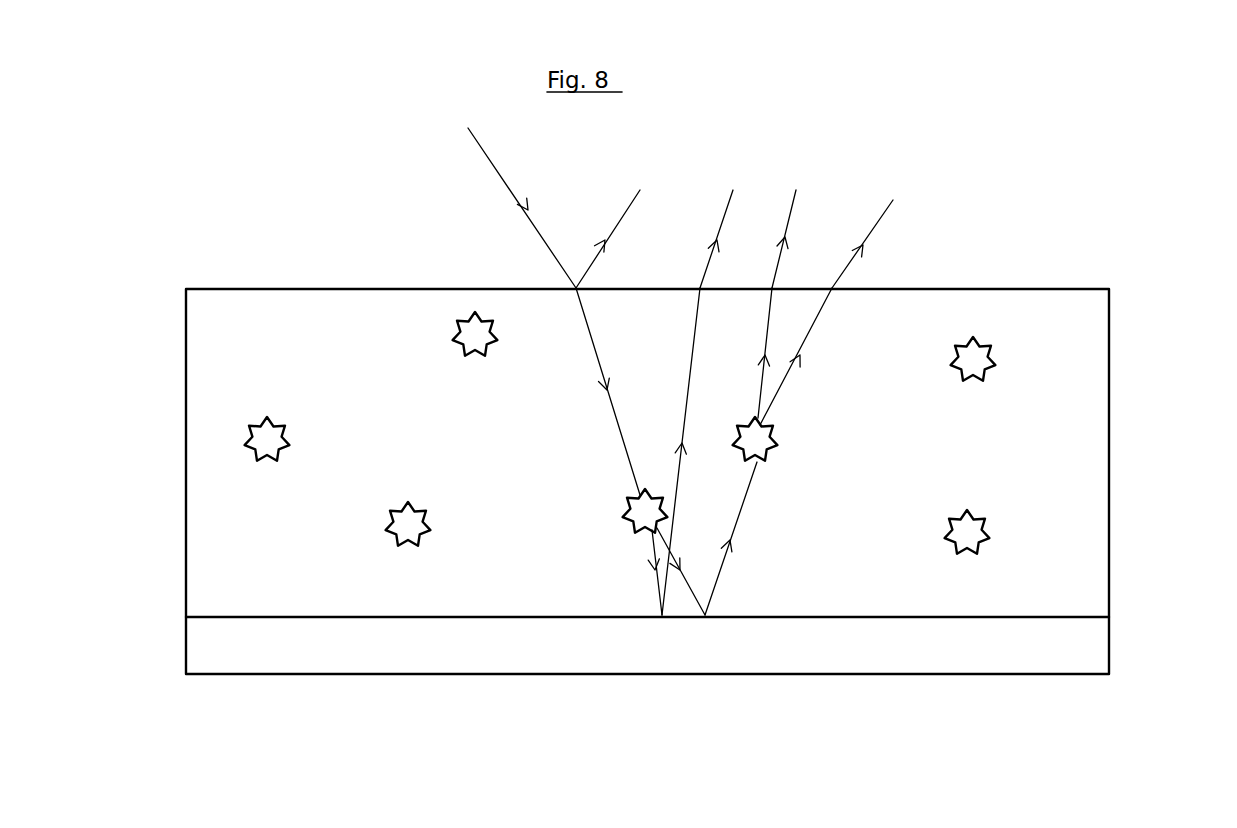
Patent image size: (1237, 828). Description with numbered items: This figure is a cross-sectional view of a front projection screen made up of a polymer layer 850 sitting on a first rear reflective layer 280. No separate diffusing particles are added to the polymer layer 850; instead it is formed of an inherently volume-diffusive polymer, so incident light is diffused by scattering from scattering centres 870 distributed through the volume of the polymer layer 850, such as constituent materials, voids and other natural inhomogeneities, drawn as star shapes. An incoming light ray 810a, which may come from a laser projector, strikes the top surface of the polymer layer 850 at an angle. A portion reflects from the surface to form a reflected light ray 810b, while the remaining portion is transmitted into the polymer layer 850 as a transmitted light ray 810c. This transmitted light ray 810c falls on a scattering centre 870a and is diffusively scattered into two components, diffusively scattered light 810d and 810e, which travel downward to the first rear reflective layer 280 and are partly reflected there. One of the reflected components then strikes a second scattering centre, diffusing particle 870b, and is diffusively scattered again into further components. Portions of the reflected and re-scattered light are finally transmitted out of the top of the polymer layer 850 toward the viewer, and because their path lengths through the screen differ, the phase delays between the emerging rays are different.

The polymer layer 850 is at (1109, 423).
The first rear reflective layer 280 is at (1087, 645).
The scattering centres 870 is at (267, 418).
The scattering centre 870a is at (652, 508).
The diffusing particle 870b is at (760, 437).
The incoming light ray 810a is at (500, 170).
The reflected light ray 810b is at (622, 217).
The transmitted light ray 810c is at (596, 358).
The diffusively scattered light 810d is at (652, 548).
The diffusively scattered light 810e is at (692, 580).